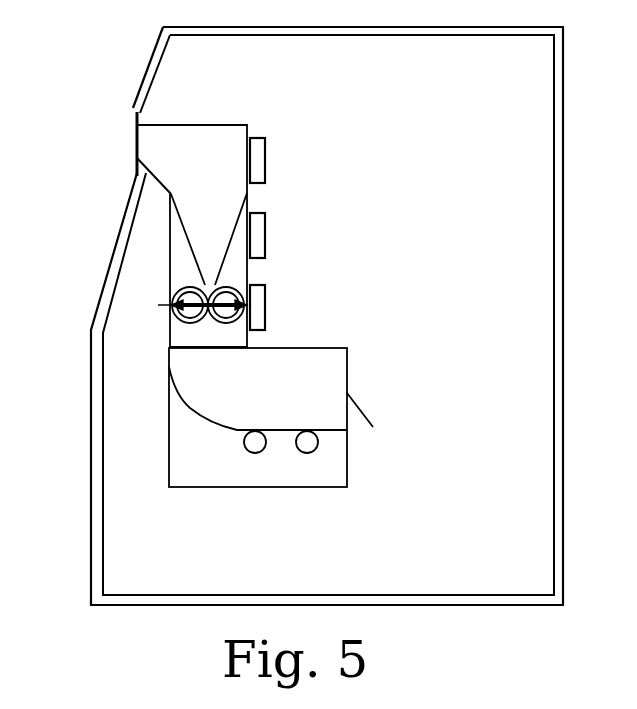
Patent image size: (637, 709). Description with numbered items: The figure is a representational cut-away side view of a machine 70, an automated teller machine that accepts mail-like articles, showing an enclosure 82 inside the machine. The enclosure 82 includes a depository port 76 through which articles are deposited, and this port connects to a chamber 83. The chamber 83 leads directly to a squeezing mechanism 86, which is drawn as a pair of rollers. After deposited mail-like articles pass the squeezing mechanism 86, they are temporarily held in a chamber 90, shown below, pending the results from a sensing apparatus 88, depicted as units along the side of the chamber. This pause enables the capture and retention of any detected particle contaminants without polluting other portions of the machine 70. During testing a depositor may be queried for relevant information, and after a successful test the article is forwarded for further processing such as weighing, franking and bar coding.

The machine 70 is at (116, 65).
The depository port 76 is at (147, 152).
The enclosure 82 is at (158, 183).
The chamber 83 is at (221, 174).
The squeezing mechanism 86 is at (190, 300).
The sensing apparatus 88 is at (266, 154).
The chamber 90 is at (233, 403).